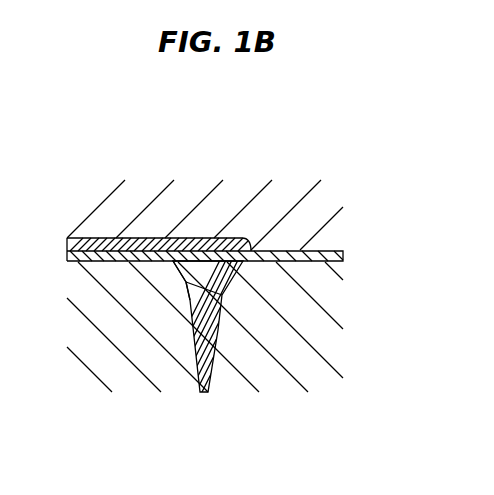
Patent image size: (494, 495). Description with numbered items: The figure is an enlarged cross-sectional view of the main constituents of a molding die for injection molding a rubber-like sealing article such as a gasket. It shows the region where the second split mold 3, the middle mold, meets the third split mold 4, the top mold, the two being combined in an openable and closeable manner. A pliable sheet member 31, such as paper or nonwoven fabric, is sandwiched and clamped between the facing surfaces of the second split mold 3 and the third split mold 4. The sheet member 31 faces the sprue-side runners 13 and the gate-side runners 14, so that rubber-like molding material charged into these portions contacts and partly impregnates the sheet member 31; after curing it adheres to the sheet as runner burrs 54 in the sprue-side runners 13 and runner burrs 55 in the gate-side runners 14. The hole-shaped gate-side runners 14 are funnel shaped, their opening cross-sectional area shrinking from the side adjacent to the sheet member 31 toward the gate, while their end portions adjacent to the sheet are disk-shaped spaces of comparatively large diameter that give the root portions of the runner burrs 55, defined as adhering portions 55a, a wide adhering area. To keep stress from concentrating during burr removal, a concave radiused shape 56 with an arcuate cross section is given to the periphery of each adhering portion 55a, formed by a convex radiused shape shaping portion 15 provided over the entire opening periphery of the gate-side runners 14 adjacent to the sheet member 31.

The second split mold 3 is at (84, 362).
The third split mold 4 is at (92, 208).
The sprue-side runners 13 is at (133, 237).
The gate-side runners 14 is at (216, 306).
The radiused shape shaping portion 15 is at (222, 266).
The sheet member 31 is at (266, 250).
The runner burrs 54 is at (167, 240).
The runner burrs 55 is at (189, 352).
The adhering portions 55a is at (206, 252).
The radiused shape 56 is at (178, 272).